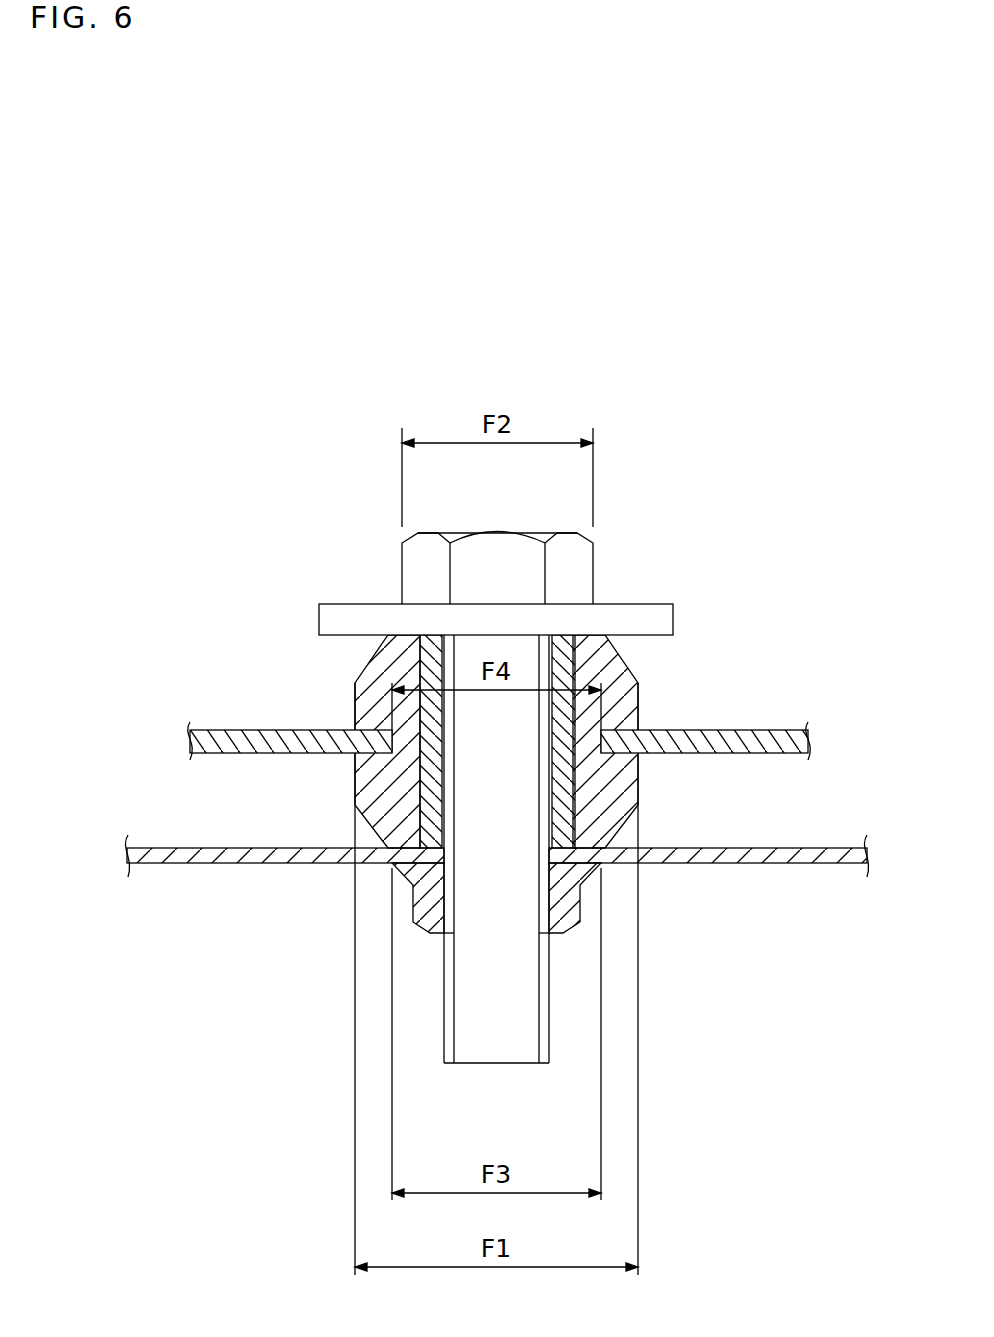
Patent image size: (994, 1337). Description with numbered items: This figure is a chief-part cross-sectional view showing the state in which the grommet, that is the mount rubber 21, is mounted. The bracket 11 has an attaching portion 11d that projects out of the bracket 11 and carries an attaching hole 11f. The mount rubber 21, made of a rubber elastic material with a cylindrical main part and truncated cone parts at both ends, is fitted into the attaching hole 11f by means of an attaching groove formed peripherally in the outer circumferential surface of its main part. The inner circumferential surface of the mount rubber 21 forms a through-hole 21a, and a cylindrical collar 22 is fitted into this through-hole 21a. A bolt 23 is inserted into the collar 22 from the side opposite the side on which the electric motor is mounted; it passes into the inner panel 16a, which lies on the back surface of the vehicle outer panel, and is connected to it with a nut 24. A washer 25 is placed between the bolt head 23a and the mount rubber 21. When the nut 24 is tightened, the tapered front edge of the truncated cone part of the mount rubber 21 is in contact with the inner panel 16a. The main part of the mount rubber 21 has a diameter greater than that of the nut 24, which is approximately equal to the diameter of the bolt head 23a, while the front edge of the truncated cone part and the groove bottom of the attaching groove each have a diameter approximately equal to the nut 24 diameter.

The bracket 11 is at (703, 740).
The attaching portion 11d is at (273, 742).
The attaching hole 11f is at (403, 745).
The inner panel 16a is at (787, 863).
The mount rubber 21 is at (672, 672).
The through-hole 21a is at (570, 773).
The collar 22 is at (430, 797).
The bolt 23 is at (608, 567).
The bolt head 23a is at (500, 568).
The nut 24 is at (568, 900).
The washer 25 is at (610, 620).